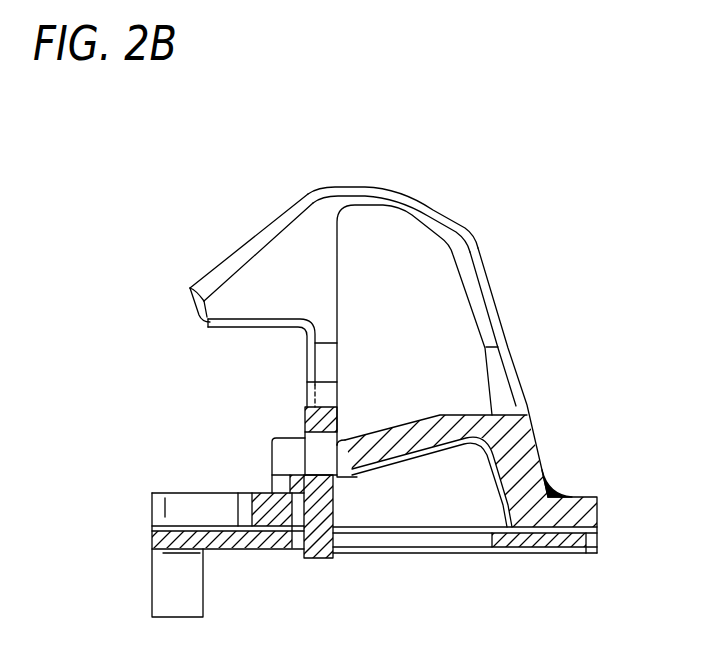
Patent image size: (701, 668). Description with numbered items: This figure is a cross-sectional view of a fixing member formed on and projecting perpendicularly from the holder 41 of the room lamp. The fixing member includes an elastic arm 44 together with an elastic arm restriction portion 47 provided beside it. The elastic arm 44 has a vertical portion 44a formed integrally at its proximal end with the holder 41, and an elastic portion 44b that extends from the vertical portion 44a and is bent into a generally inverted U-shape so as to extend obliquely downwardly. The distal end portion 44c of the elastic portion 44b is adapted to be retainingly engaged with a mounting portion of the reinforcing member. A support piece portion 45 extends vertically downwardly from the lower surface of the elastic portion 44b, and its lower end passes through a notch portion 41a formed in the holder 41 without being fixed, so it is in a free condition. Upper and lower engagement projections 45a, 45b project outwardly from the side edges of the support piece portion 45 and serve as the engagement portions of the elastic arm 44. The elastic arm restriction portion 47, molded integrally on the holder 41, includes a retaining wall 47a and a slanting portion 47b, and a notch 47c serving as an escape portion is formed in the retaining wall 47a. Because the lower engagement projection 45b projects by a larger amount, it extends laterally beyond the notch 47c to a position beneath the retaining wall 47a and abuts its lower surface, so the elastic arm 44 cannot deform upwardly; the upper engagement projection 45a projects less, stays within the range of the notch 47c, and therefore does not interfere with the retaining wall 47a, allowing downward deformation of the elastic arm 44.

The holder 41 is at (546, 568).
The notch portion 41a is at (437, 545).
The elastic arm 44 is at (285, 164).
The vertical portion 44a is at (502, 327).
The elastic portion 44b is at (240, 237).
The distal end portion 44c is at (190, 310).
The support piece portion 45 is at (305, 362).
The upper engagement projection 45a is at (305, 420).
The lower engagement projection 45b is at (316, 530).
The elastic arm restriction portion 47 is at (578, 443).
The retaining wall 47a is at (297, 437).
The slanting portion 47b is at (420, 418).
The notch 47c is at (340, 437).